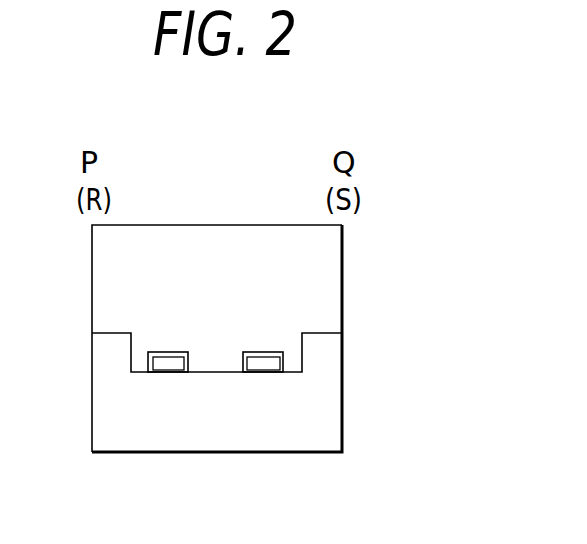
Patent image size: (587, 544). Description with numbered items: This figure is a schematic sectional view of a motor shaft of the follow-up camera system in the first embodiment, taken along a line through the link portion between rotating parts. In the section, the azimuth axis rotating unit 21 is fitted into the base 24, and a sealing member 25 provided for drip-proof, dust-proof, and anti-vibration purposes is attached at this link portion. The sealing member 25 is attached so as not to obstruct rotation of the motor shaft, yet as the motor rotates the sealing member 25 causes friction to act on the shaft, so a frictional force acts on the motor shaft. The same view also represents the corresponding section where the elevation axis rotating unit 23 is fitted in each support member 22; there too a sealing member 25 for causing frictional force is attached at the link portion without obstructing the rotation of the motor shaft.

The azimuth axis rotating unit 21 is at (308, 274).
The elevation axis rotating unit 23 is at (282, 298).
The base 24 is at (327, 433).
The support member 22 is at (291, 405).
The sealing member 25 is at (165, 363).